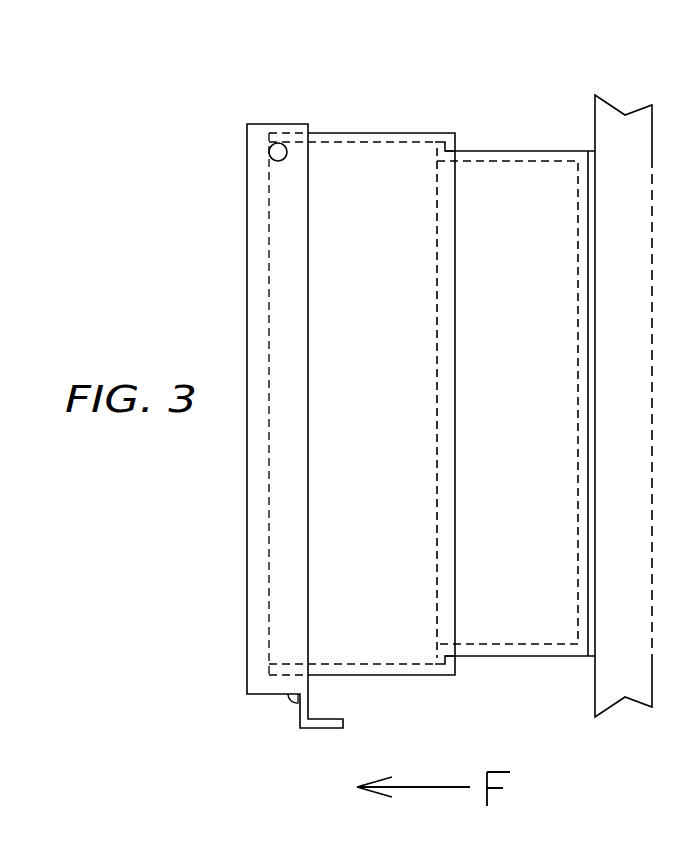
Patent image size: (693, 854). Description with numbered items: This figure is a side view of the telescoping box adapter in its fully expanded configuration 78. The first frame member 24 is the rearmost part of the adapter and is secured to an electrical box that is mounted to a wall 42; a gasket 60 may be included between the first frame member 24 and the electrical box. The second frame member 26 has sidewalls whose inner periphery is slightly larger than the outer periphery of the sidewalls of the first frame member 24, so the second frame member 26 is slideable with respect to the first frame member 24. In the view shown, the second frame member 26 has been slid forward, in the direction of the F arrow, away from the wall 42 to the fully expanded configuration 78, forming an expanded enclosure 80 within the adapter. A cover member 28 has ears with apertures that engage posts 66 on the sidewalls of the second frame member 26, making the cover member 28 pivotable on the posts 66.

The first frame member 24 is at (542, 414).
The second frame member 26 is at (352, 418).
The cover member 28 is at (273, 234).
The wall 42 is at (610, 425).
The gasket 60 is at (593, 150).
The posts 66 is at (278, 143).
The fully expanded configuration 78 is at (424, 100).
The expanded enclosure 80 is at (517, 648).